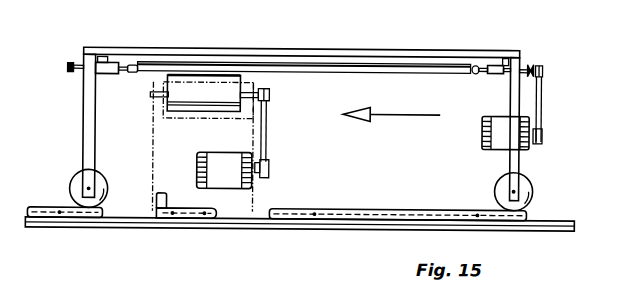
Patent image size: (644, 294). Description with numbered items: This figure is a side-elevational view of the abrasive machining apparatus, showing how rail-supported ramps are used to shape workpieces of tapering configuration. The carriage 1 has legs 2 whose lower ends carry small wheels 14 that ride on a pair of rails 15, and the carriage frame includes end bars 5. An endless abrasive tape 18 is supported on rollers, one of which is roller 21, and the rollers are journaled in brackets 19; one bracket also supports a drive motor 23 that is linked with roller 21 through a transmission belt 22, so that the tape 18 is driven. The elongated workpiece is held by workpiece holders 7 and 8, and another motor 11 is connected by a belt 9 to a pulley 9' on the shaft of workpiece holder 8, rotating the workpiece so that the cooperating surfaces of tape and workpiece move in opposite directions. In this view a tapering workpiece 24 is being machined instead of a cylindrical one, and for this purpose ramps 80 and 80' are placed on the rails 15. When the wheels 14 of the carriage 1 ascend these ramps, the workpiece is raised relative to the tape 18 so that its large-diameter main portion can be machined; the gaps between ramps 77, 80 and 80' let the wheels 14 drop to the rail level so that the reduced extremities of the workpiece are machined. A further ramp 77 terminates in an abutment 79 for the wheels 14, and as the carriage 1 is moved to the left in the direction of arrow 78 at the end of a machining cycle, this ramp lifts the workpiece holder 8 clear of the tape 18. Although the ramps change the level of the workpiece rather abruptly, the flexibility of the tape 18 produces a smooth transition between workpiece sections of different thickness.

The carriage 1 is at (213, 50).
The legs 2 is at (90, 146).
The end bars 5 is at (101, 58).
The workpiece holder 7 is at (113, 64).
The workpiece holder 8 is at (493, 66).
The belt 9 is at (559, 110).
The pulley 9' is at (558, 42).
The motor 11 is at (497, 139).
The wheels 14 is at (82, 190).
The rails 15 is at (246, 221).
The endless abrasive tape 18 is at (190, 75).
The brackets 19 is at (152, 129).
The roller 21 is at (229, 89).
The transmission belt 22 is at (266, 124).
The drive motor 23 is at (200, 157).
The tapering workpieces 24 is at (346, 66).
The ramp 77 is at (190, 210).
The arrow 78 is at (410, 114).
The abutment 79 is at (163, 205).
The ramp 80 is at (398, 244).
The ramp 80' is at (65, 242).